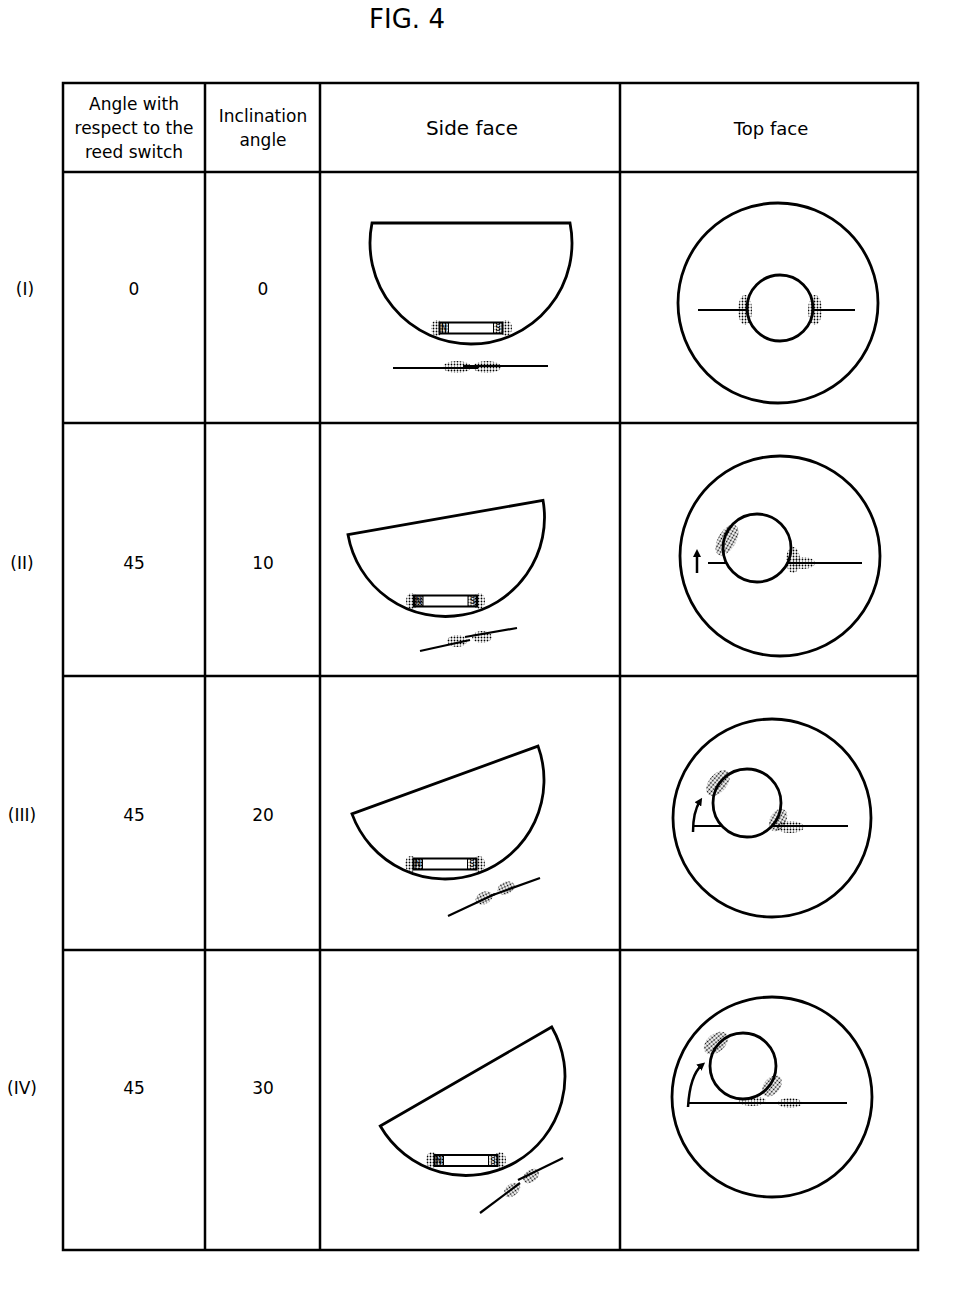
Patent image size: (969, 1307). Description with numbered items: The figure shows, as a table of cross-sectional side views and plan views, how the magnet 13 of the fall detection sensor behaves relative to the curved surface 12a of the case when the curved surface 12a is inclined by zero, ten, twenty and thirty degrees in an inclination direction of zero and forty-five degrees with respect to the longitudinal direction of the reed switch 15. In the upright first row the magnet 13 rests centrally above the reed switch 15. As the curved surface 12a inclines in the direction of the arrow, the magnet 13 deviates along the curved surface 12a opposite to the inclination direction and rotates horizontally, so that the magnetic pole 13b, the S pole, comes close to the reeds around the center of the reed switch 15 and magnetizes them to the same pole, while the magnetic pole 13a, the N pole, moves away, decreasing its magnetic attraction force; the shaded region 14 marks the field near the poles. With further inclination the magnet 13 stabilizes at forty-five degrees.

The curved surface 12a is at (556, 305).
The magnet 13 is at (472, 321).
The magnetic pole 13a is at (446, 321).
The magnetic pole 13b is at (500, 321).
The magnetic flux 14 is at (437, 325).
The reed switch 15 is at (492, 371).